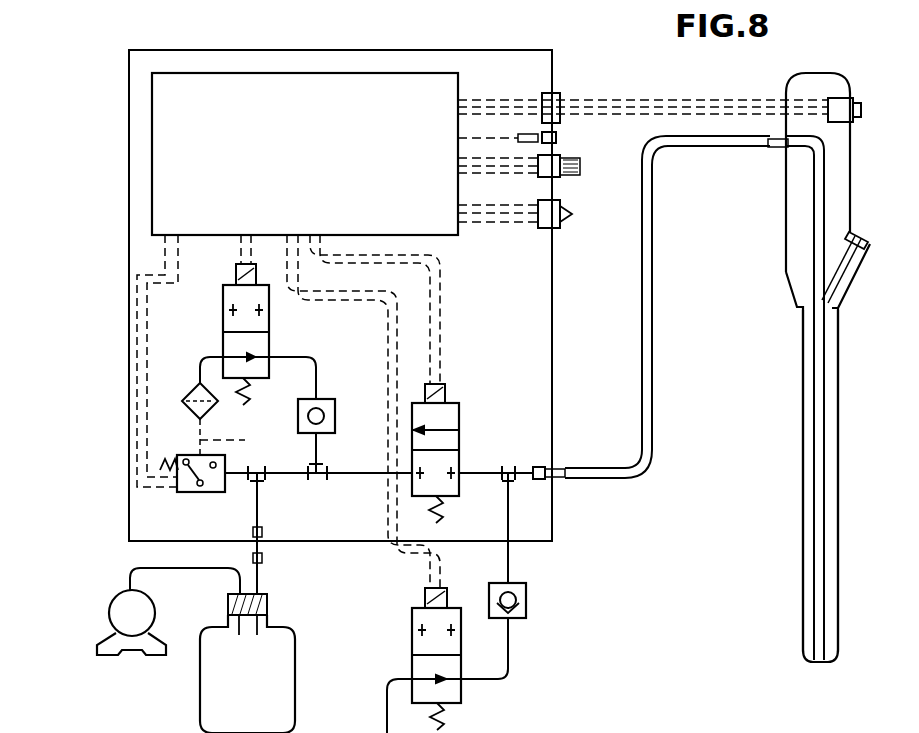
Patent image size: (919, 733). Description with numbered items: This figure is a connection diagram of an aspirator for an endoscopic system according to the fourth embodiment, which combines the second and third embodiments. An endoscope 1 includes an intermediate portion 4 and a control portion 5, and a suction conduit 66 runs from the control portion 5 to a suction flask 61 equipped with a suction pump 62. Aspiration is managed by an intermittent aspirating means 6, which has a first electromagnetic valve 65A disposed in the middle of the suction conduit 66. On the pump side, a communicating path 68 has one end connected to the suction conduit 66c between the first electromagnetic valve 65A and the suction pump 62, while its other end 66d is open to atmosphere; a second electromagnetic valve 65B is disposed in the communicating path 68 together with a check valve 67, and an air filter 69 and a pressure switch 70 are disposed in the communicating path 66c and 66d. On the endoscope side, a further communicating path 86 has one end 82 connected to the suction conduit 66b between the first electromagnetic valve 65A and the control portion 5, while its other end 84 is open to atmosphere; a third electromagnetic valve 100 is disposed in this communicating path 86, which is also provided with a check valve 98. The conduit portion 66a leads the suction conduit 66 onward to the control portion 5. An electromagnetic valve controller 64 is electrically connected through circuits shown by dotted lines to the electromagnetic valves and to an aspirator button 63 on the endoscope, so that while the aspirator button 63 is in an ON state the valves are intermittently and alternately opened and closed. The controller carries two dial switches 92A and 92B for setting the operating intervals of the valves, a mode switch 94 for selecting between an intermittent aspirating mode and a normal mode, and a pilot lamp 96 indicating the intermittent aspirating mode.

The endoscope 1 is at (843, 530).
The intermediate portion 4 is at (839, 612).
The control portion 5 is at (840, 200).
The intermittent aspirating means 6 is at (552, 68).
The suction flask 61 is at (287, 690).
The suction pump 62 is at (110, 615).
The aspirator button 63 is at (863, 112).
The electromagnetic valve controller 64 is at (318, 180).
The first electromagnetic valve 65A is at (455, 430).
The second electromagnetic valve 65B is at (262, 322).
The suction conduit 66 is at (808, 215).
The suction conduit portion 66a is at (654, 405).
The suction conduit portion 66b is at (488, 470).
The suction conduit portion 66c is at (342, 476).
The other end of communicating path 66d is at (248, 441).
The check valve 67 is at (312, 398).
The communicating path 68 is at (323, 456).
The air filter 69 is at (210, 405).
The pressure switch 70 is at (193, 493).
The one end of communicating path 82 is at (510, 520).
The other end of communicating path 84 is at (386, 715).
The communicating path 86 is at (512, 648).
The dial switch 92A is at (582, 167).
The dial switch 92B is at (604, 182).
The mode switch 94 is at (570, 214).
The pilot lamp 96 is at (558, 138).
The check valve 98 is at (528, 600).
The third electromagnetic valve 100 is at (420, 648).